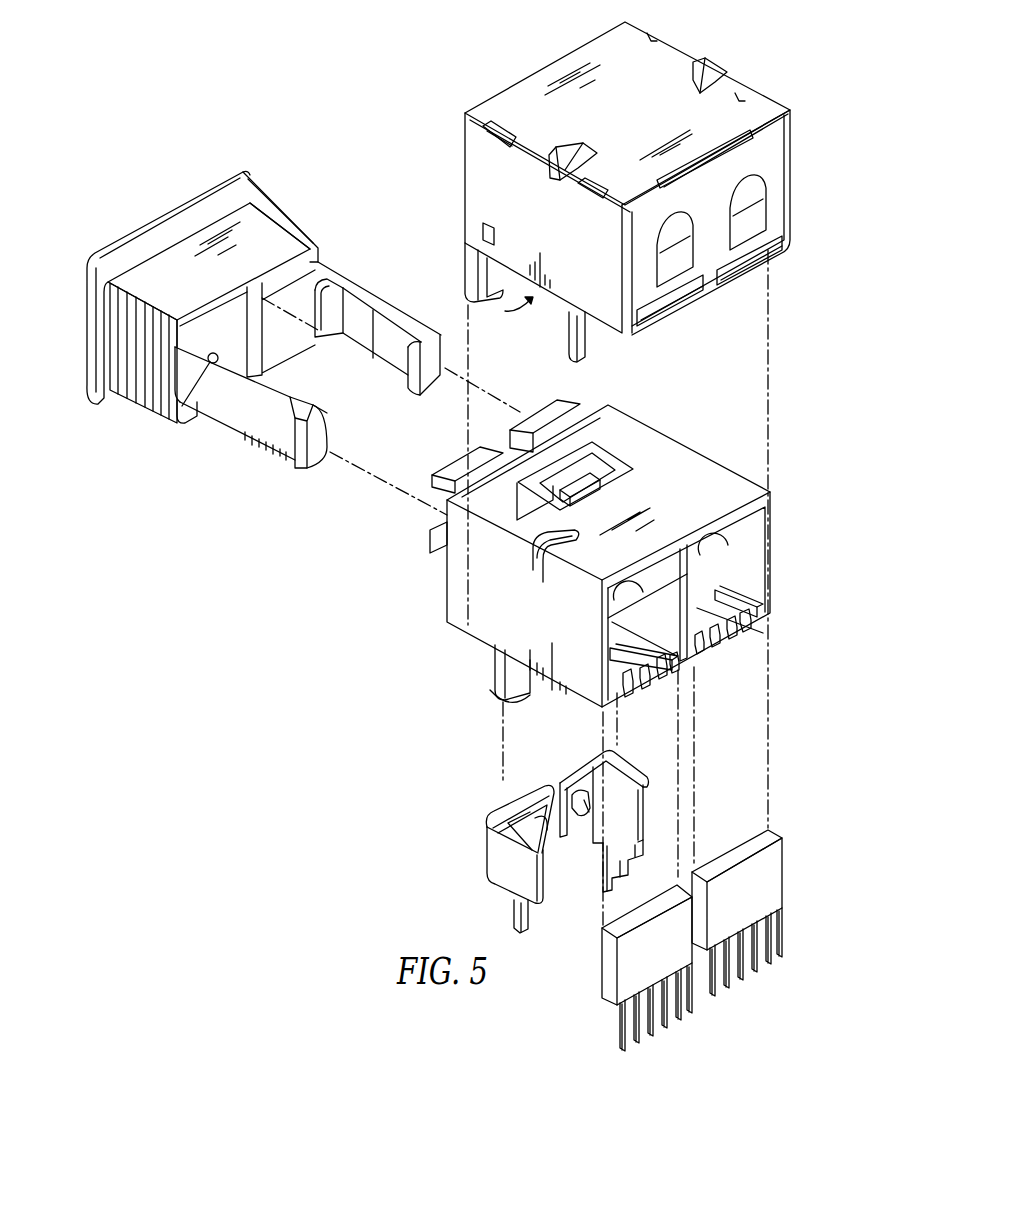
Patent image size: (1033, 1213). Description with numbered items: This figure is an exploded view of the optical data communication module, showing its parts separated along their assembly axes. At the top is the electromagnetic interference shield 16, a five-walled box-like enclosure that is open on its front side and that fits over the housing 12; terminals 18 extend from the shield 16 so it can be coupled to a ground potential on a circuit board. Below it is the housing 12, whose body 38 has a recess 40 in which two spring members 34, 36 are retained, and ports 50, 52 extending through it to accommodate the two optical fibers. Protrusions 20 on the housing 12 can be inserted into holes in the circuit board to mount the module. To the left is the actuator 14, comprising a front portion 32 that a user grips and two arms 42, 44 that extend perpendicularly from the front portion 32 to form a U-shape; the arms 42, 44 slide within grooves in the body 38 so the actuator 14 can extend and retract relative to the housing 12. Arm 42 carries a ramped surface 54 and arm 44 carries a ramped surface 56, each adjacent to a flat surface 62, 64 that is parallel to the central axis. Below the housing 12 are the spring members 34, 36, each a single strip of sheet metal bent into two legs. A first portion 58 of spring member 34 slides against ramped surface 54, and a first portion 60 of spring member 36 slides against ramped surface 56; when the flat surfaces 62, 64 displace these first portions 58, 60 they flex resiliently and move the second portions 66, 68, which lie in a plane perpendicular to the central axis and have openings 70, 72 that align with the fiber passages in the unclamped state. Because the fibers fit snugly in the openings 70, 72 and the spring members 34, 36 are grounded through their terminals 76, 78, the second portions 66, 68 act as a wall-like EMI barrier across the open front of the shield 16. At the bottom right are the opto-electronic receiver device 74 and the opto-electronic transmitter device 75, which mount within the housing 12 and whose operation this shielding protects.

The housing 12 is at (706, 36).
The electromagnetic interference (EMI) shield 16 is at (531, 80).
The terminals 18 is at (573, 358).
The actuator 14 is at (293, 190).
The front portion 32 is at (86, 390).
The arm 42 is at (388, 308).
The ramped surface 54 is at (356, 300).
The flat surface 62 is at (398, 376).
The arm 44 is at (228, 440).
The flat surface 64 is at (292, 400).
The ramped surface 56 is at (168, 420).
The body 38 is at (679, 442).
The recess 40 is at (626, 423).
The port 50 is at (714, 546).
The port 52 is at (626, 602).
The protrusions 20 is at (492, 690).
The spring member 34 is at (670, 787).
The first portion 58 is at (628, 767).
The second portion 66 is at (566, 781).
The opening 70 is at (586, 825).
The terminal 76 is at (625, 884).
The spring member 36 is at (470, 855).
The first portion 60 is at (510, 880).
The second portion 68 is at (500, 800).
The opening 72 is at (535, 812).
The terminal 78 is at (515, 918).
The opto-electronic receiver device 74 is at (606, 967).
The opto-electronic transmitter device 75 is at (780, 874).